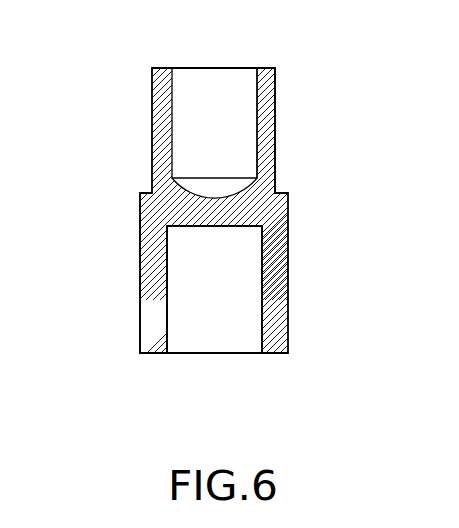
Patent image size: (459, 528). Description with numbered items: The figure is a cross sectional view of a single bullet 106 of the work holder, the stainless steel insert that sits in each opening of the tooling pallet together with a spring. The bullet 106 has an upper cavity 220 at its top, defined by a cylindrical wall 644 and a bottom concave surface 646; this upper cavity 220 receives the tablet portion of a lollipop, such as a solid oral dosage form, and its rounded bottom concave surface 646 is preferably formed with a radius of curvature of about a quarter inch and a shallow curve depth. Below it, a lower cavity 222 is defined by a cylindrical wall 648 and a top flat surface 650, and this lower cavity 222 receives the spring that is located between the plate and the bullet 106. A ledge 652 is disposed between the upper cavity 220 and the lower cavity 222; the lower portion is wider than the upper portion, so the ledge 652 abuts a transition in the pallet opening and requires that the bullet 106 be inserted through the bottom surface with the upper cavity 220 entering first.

The bullet 106 is at (141, 231).
The upper cavity 220 is at (198, 97).
The lower cavity 222 is at (217, 325).
The cylindrical wall 644 is at (257, 110).
The bottom concave surface 646 is at (218, 198).
The cylindrical wall 648 is at (168, 335).
The top flat surface 650 is at (236, 227).
The ledge 652 is at (285, 193).